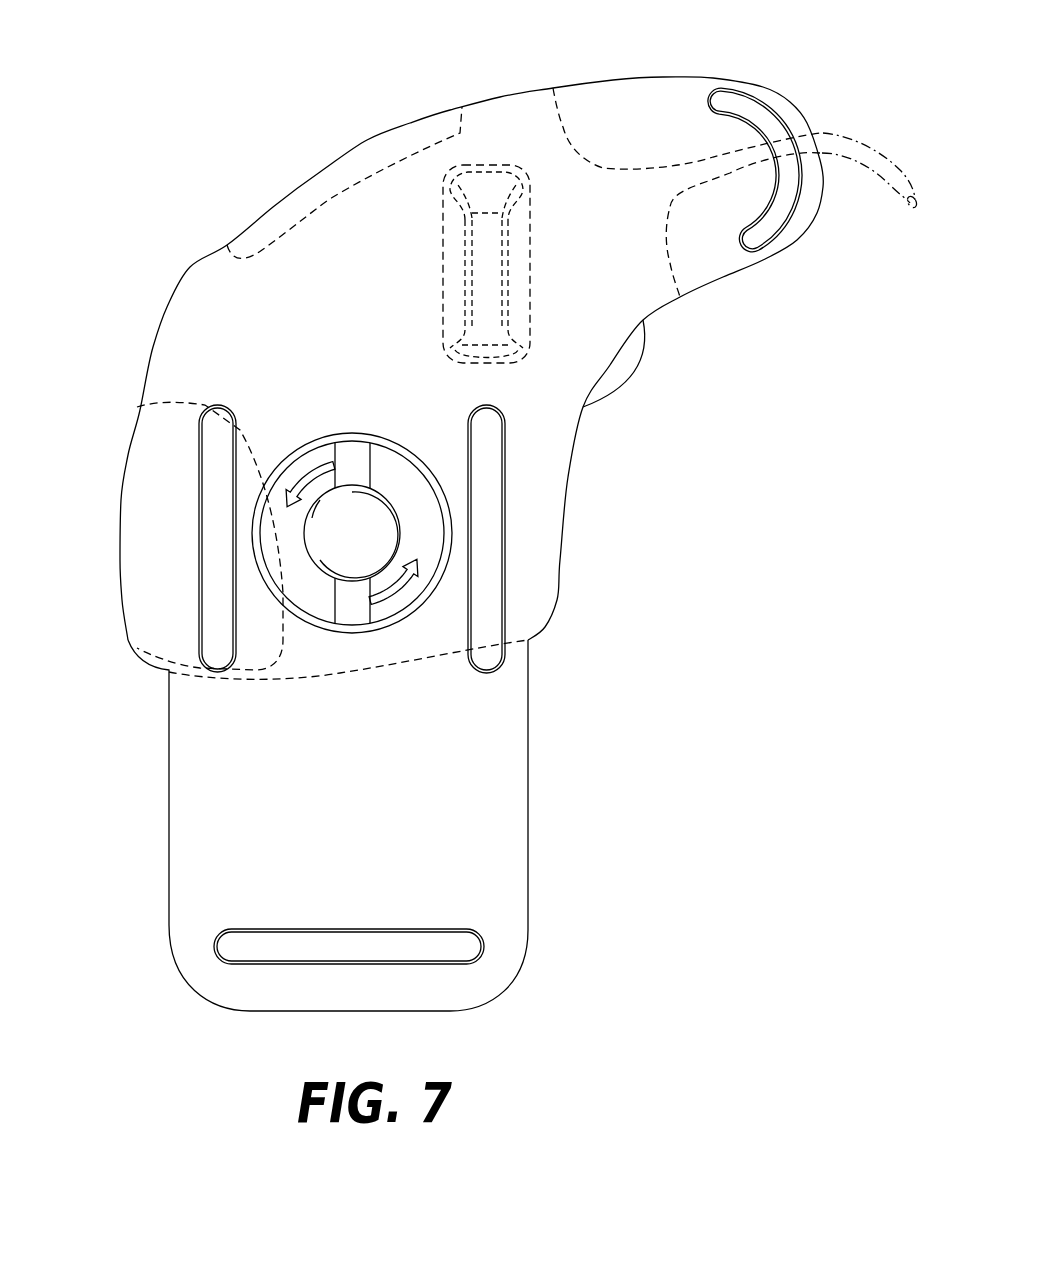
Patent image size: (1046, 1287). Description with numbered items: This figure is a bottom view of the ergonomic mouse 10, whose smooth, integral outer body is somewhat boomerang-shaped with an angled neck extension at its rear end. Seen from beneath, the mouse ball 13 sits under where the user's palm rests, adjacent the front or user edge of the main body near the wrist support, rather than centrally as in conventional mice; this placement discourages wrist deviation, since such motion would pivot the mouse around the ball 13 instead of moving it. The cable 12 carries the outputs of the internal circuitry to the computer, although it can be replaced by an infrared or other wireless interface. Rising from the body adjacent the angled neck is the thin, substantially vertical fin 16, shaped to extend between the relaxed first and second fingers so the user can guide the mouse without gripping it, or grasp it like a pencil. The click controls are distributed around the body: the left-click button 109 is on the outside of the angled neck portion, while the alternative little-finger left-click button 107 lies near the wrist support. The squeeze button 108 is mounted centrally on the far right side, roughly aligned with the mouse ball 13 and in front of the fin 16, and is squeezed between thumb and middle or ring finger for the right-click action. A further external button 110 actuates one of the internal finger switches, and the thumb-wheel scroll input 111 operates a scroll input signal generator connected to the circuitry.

The mouse 10 is at (180, 166).
The cable 12 is at (870, 143).
The mouse ball 13 is at (367, 532).
The fin 16 is at (485, 240).
The button 107 is at (172, 400).
The squeeze button 108 is at (333, 197).
The button 109 is at (563, 127).
The button 110 is at (670, 263).
The thumb-wheel scroll input 111 is at (627, 365).